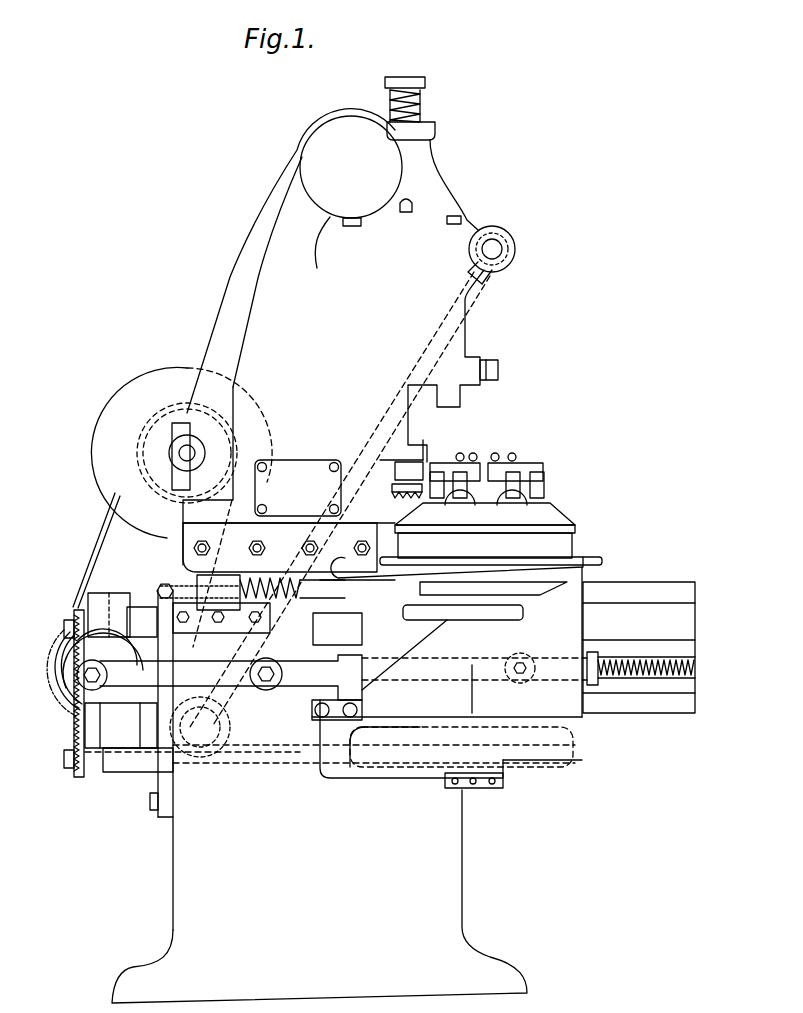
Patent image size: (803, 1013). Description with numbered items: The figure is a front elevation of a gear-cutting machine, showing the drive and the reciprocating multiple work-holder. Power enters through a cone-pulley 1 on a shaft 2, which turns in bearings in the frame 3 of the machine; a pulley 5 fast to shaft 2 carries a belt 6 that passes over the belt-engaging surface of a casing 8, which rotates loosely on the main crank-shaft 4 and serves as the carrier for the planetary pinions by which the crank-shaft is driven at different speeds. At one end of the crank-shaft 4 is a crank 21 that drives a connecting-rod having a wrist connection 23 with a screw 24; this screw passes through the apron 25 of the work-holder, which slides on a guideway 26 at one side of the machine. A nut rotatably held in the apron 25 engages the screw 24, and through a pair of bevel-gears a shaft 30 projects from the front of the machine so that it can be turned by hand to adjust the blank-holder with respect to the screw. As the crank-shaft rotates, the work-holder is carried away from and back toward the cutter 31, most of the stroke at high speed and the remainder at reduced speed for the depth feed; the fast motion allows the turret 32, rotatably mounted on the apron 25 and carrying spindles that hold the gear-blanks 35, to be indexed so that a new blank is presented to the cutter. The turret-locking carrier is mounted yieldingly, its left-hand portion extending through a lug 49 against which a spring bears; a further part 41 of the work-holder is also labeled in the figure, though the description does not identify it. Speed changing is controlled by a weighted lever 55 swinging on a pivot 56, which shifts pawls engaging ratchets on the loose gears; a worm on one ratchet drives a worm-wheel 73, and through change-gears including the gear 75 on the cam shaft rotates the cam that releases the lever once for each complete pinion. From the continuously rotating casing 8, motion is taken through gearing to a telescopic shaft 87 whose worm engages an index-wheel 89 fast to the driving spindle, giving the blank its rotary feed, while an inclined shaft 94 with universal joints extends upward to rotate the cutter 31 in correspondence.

The cone-pulley 1 is at (103, 465).
The shaft 2 is at (189, 452).
The frame 3 is at (220, 330).
The main crank-shaft 4 is at (120, 602).
The pulley 5 is at (112, 494).
The belt 6 is at (97, 542).
The casing 8 is at (140, 607).
The crank 21 is at (78, 652).
The wrist connection 23 is at (258, 688).
The screw 24 is at (695, 664).
The apron 25 is at (560, 640).
The guideway 26 is at (660, 593).
The shaft 30 is at (522, 660).
The cutter 31 is at (340, 499).
The turret 32 is at (528, 540).
The gear-blanks 35 is at (530, 490).
The bolt 41 is at (336, 542).
The lug 49 is at (219, 543).
The weighted lever 55 is at (77, 668).
The pivot 56 is at (251, 570).
The worm-wheel 73 is at (109, 602).
The change-gear 75 is at (74, 612).
The telescopic shaft 87 is at (338, 782).
The index-wheel 89 is at (548, 765).
The inclined shaft 94 is at (245, 643).